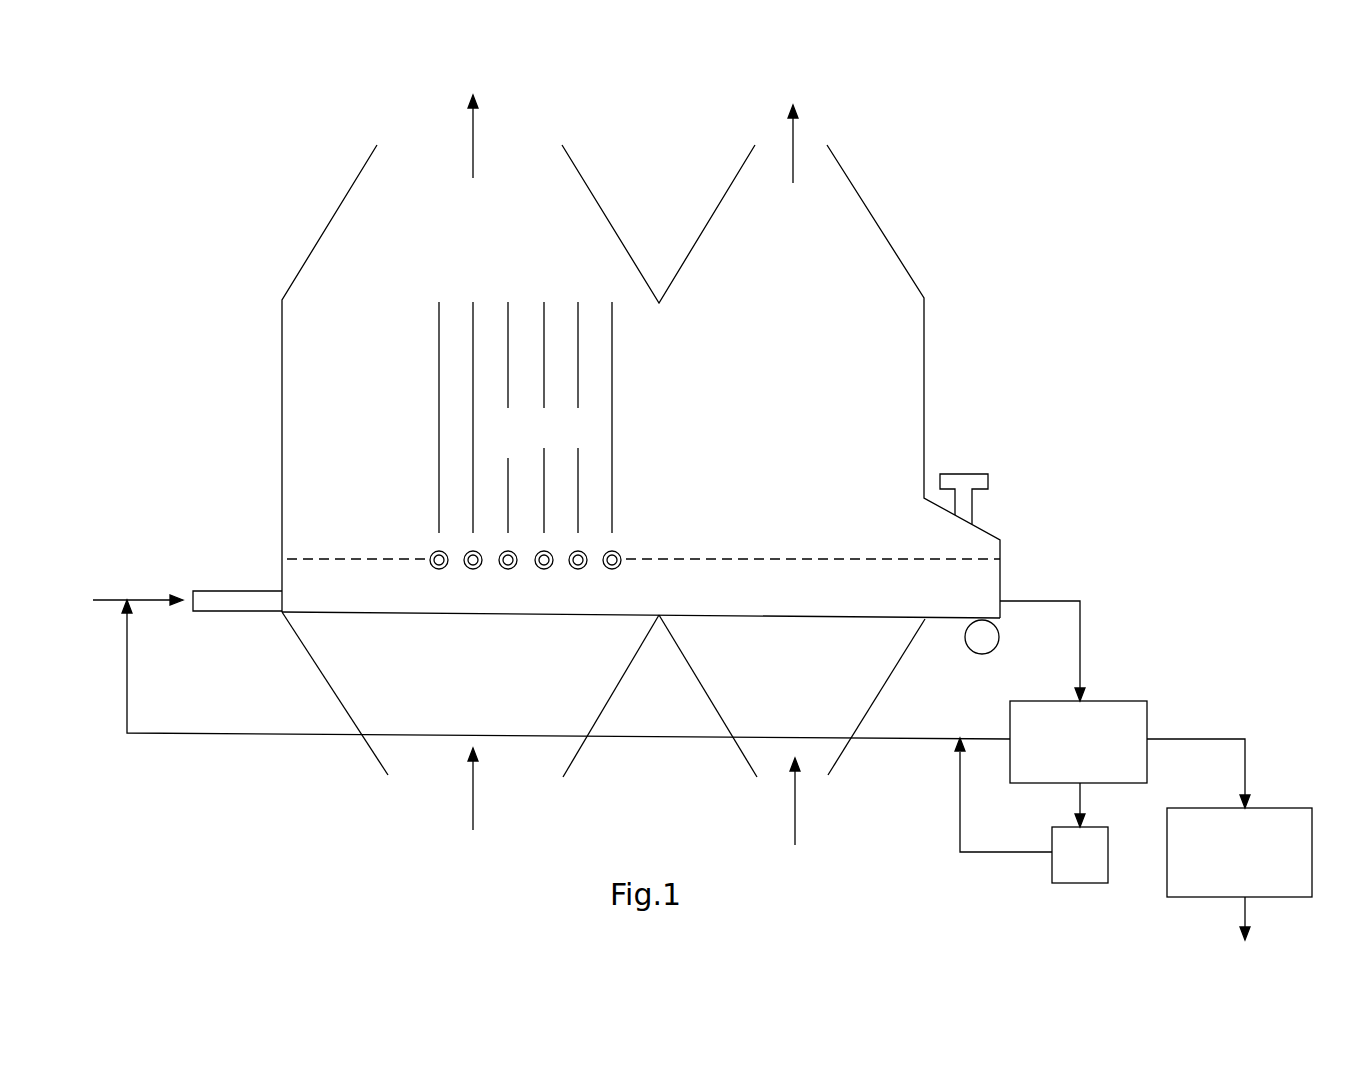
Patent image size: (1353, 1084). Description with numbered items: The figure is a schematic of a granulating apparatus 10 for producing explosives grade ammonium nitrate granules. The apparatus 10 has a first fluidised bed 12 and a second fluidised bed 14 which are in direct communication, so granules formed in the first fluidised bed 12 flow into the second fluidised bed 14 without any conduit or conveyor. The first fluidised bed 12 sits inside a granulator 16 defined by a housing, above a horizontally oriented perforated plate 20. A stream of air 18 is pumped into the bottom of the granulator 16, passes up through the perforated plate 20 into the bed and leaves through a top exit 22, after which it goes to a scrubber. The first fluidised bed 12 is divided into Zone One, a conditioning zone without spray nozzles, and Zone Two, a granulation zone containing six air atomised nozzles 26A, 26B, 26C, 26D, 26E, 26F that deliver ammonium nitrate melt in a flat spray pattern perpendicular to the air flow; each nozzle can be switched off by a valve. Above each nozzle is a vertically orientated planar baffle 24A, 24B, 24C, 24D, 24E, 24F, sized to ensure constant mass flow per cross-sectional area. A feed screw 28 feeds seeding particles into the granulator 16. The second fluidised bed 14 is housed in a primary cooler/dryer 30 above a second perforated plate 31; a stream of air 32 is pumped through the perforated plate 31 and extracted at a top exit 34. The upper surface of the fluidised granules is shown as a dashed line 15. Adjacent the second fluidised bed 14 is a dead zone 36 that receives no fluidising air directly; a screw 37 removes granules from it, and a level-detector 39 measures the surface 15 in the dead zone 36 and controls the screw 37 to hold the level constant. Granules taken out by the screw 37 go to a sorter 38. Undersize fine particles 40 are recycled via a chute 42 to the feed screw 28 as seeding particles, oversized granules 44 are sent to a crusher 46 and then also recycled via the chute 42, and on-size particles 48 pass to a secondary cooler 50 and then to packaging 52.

The granulating apparatus 10 is at (290, 236).
The first fluidised bed 12 is at (342, 589).
The second fluidised bed 14 is at (852, 596).
The surface of the fluidised granules 15 is at (795, 562).
The granulator 16 is at (288, 284).
The stream of air 18 is at (467, 801).
The perforated plate 20 is at (460, 616).
The top exit 22 is at (465, 125).
The baffle 24A is at (437, 318).
The baffle 24B is at (472, 313).
The baffle 24C is at (508, 315).
The baffle 24D is at (545, 315).
The baffle 24E is at (579, 322).
The baffle 24F is at (613, 312).
The air atomised nozzle 26A is at (432, 568).
The air atomised nozzle 26B is at (468, 569).
The air atomised nozzle 26C is at (509, 569).
The air atomised nozzle 26D is at (548, 569).
The air atomised nozzle 26E is at (583, 569).
The air atomised nozzle 26F is at (617, 569).
The feed screw 28 is at (230, 589).
The primary cooler/dryer 30 is at (898, 262).
The perforated plate 31 is at (771, 620).
The stream of air 32 is at (795, 815).
The top exit 34 is at (790, 132).
The dead zone 36 is at (974, 597).
The screw 37 is at (999, 638).
The sorter 38 is at (1120, 697).
The level-detector 39 is at (967, 480).
The undersize fine particles 40 is at (983, 735).
The chute 42 is at (655, 739).
The oversized granules 44 is at (1083, 800).
The crusher 46 is at (1072, 886).
The on-size particles 48 is at (1203, 738).
The secondary cooler 50 is at (1285, 803).
The packaging 52 is at (1235, 912).